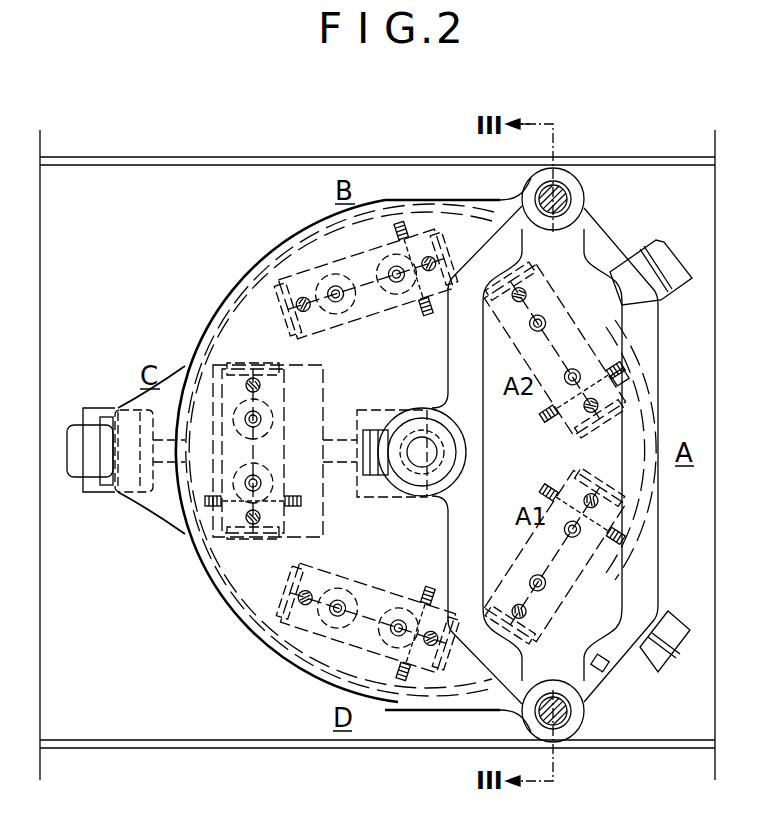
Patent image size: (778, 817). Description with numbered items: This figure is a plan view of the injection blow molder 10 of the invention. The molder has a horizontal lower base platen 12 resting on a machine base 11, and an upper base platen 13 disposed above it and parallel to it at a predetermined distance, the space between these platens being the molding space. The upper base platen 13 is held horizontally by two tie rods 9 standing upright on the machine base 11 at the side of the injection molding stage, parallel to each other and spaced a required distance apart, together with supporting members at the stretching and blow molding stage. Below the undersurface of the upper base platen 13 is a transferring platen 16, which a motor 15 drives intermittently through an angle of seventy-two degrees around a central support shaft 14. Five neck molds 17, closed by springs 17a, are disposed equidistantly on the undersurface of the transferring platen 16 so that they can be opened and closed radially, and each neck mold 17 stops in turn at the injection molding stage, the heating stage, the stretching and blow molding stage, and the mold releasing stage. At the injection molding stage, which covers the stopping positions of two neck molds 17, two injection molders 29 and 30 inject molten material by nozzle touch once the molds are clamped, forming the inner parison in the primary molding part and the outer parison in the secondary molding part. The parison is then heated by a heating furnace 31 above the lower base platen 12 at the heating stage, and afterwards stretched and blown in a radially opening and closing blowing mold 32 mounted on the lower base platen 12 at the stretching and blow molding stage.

The tie rods 9 is at (567, 193).
The injection molder 10 is at (177, 157).
The machine base 11 is at (262, 162).
The lower base platen 12 is at (270, 706).
The upper base platen 13 is at (255, 590).
The central support shaft 14 is at (422, 445).
The motor 15 is at (432, 498).
The transferring platen 16 is at (242, 326).
The neck molds 17 is at (410, 664).
The springs 17a is at (624, 380).
The injection molder 29 is at (668, 614).
The injection molder 30 is at (656, 243).
The heating furnace 31 is at (330, 284).
The blowing mold 32 is at (205, 500).